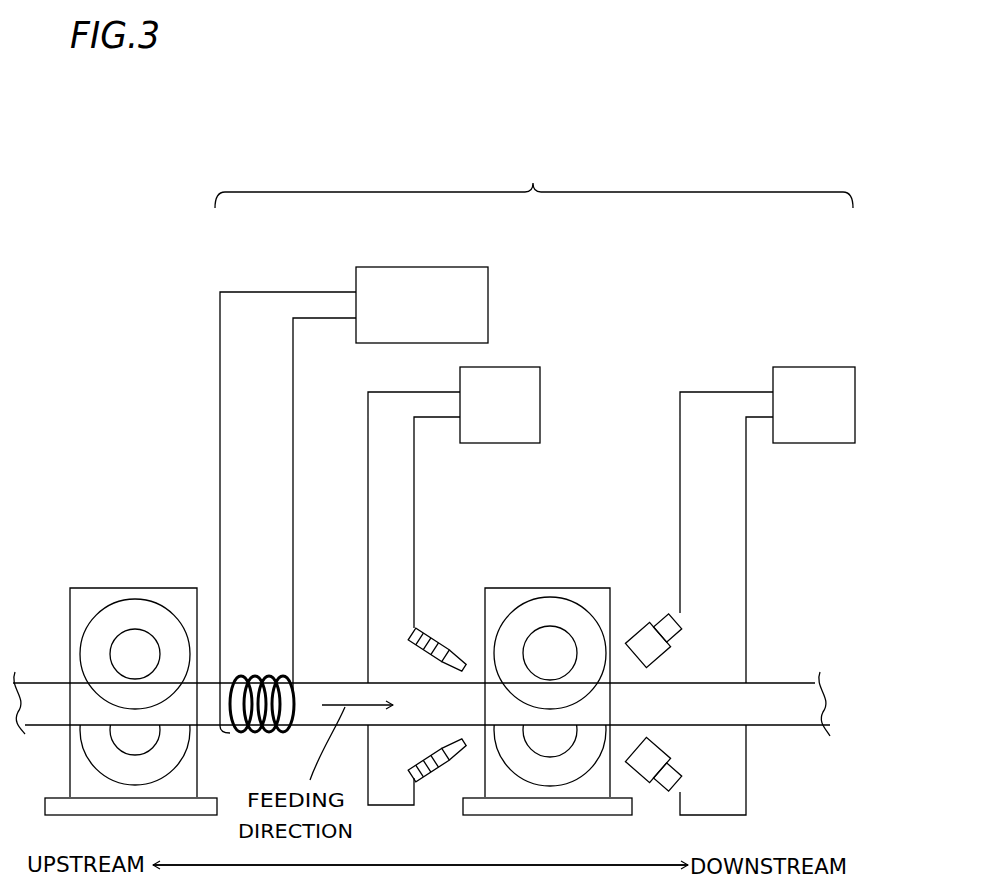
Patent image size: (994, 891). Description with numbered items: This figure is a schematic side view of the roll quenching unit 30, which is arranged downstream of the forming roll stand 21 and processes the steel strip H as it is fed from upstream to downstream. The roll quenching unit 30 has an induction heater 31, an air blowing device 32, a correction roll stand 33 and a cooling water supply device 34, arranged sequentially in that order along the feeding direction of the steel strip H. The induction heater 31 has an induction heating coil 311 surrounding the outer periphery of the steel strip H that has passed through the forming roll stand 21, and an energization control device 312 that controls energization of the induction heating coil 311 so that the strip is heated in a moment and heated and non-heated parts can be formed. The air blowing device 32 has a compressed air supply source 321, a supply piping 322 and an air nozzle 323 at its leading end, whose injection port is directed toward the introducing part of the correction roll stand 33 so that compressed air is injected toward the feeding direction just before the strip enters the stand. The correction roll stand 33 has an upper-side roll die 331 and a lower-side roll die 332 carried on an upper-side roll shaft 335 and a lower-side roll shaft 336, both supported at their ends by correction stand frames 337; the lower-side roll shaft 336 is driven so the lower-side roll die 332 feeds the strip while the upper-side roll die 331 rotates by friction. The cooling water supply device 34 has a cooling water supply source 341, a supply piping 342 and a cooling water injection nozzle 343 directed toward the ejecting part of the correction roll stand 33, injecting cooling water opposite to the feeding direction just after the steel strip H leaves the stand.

The forming roll stand 21 is at (90, 575).
The roll quenching unit 30 is at (501, 503).
The induction heater 31 is at (317, 501).
The induction heating coil 311 is at (250, 733).
The energization control device 312 is at (423, 267).
The air blowing device 32 is at (456, 565).
The compressed air supply source 321 is at (542, 405).
The supply piping 322 is at (369, 493).
The air nozzle 323 is at (443, 647).
The correction roll stand 33 is at (531, 699).
The upper-side roll die 331 is at (548, 605).
The lower-side roll die 332 is at (553, 778).
The upper-side roll shaft 335 is at (548, 652).
The lower-side roll shaft 336 is at (552, 740).
The correction stand frame 337 is at (485, 608).
The cooling water supply device 34 is at (738, 562).
The cooling water supply source 341 is at (809, 367).
The supply piping 342 is at (680, 494).
The cooling water injection nozzle 343 is at (638, 630).
The steel strip H is at (330, 685).